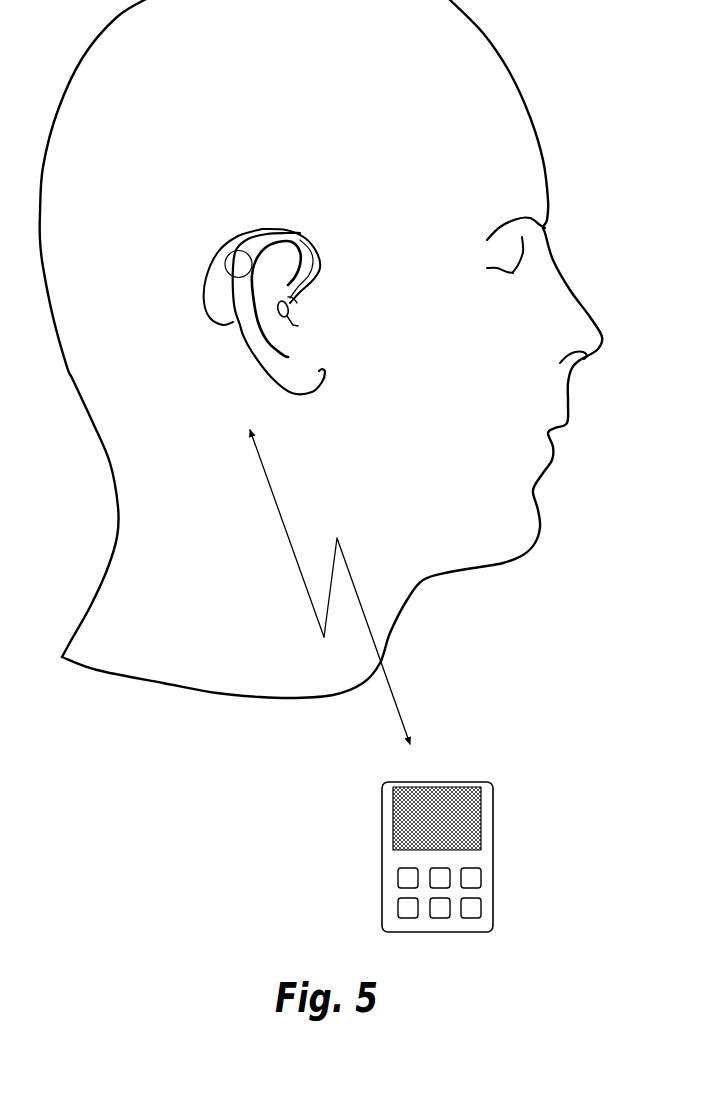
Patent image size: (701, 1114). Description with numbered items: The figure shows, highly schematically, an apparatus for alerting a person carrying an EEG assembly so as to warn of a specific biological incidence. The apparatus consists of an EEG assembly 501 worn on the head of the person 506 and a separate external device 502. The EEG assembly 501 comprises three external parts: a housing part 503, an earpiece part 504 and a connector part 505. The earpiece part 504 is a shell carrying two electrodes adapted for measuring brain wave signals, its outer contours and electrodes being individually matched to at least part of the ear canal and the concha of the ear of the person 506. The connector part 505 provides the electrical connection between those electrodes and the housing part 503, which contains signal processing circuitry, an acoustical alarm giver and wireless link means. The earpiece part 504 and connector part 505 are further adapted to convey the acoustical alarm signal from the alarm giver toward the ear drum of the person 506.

The EEG assembly 501 is at (184, 295).
The external device 502 is at (493, 835).
The housing part 503 is at (297, 230).
The earpiece part 504 is at (292, 328).
The connector part 505 is at (317, 273).
The person 506 is at (538, 43).